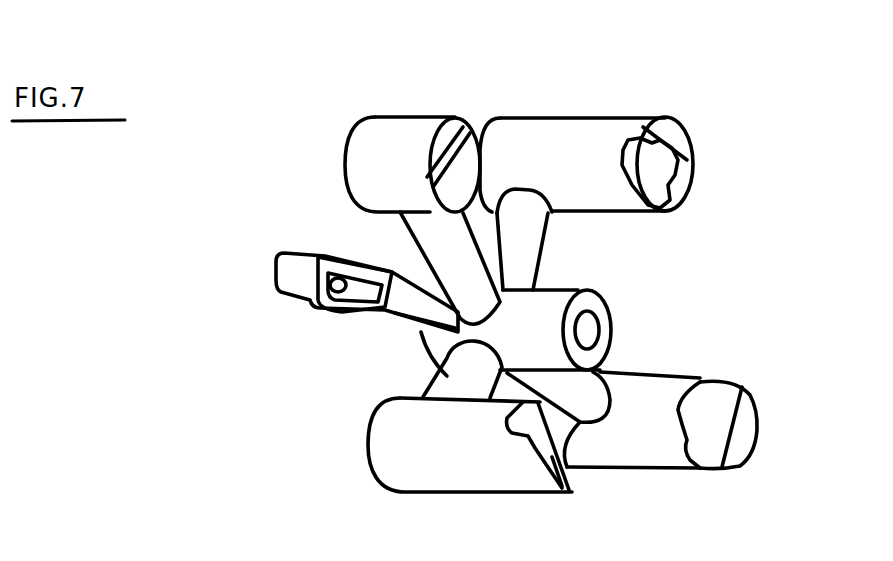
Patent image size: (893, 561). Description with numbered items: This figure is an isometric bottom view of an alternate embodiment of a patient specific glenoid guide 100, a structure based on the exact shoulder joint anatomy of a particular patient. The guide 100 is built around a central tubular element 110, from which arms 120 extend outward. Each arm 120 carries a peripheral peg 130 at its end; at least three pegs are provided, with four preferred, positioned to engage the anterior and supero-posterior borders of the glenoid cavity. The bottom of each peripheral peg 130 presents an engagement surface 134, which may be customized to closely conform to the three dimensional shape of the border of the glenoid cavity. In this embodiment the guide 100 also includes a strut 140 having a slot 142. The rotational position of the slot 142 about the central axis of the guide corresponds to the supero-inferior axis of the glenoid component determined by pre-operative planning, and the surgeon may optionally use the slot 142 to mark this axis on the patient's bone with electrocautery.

The patient specific glenoid guide 100 is at (724, 67).
The central tubular element 110 is at (600, 338).
The arm 120 is at (550, 233).
The peripheral peg 130 is at (653, 473).
The engagement surface 134 is at (707, 447).
The strut 140 is at (320, 311).
The slot 142 is at (362, 260).